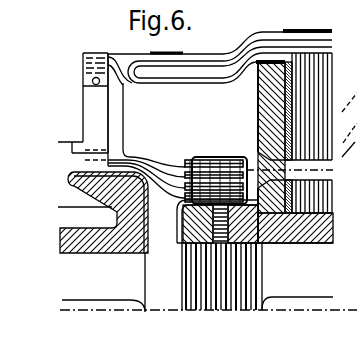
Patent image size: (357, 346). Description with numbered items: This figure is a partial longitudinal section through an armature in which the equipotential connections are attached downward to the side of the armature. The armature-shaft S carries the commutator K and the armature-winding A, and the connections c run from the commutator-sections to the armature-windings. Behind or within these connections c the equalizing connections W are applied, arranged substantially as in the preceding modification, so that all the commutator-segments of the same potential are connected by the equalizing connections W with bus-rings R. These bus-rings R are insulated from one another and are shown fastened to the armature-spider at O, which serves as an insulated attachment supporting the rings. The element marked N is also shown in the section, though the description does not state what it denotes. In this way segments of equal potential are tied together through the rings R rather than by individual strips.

The armature-winding A is at (217, 53).
The connections from the commutator-sections to the armature-windings C is at (108, 113).
The commutator K is at (80, 160).
The equalizing connections W is at (207, 160).
The bus-rings R is at (241, 157).
The insulated attachment O is at (176, 218).
The armature-shaft S is at (207, 242).
The threaded nut N is at (356, 210).